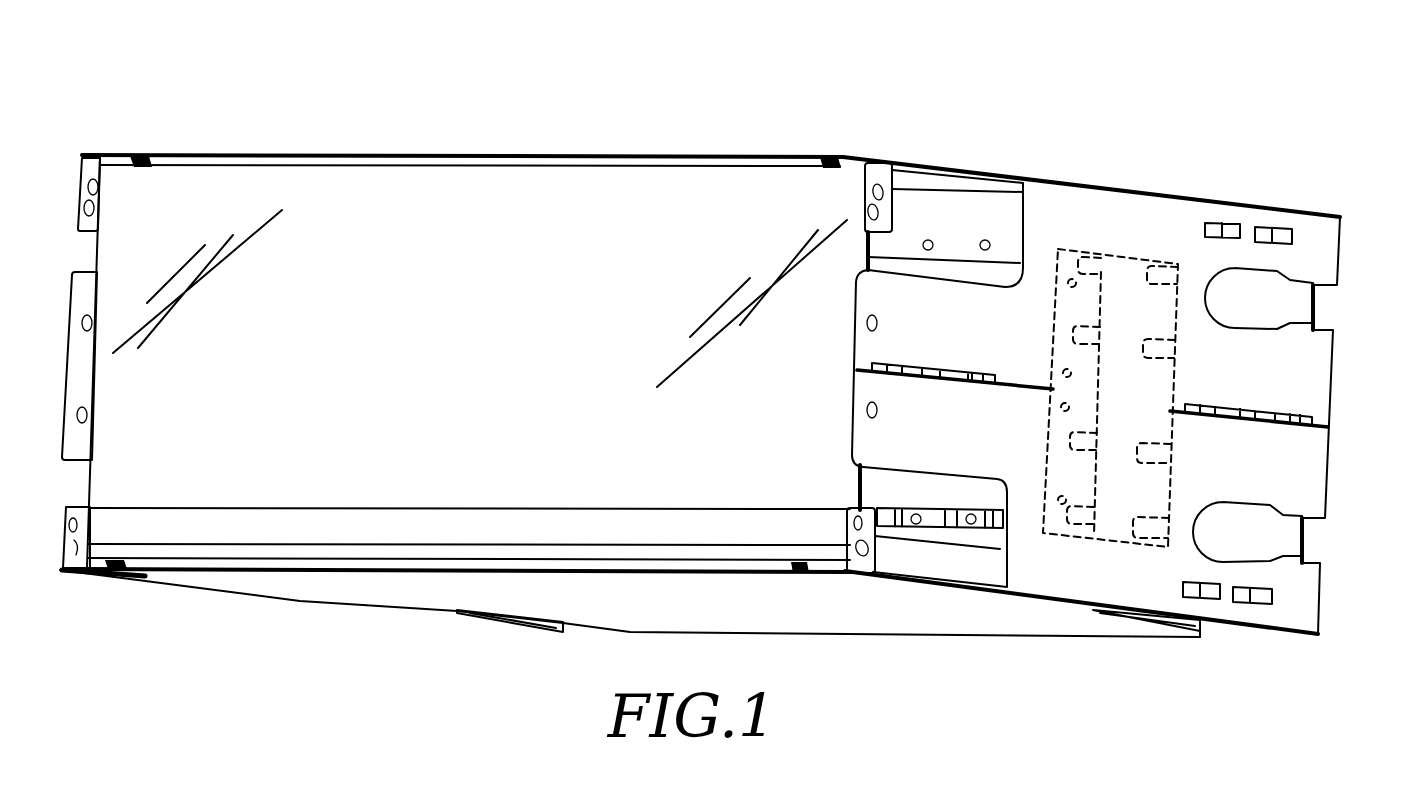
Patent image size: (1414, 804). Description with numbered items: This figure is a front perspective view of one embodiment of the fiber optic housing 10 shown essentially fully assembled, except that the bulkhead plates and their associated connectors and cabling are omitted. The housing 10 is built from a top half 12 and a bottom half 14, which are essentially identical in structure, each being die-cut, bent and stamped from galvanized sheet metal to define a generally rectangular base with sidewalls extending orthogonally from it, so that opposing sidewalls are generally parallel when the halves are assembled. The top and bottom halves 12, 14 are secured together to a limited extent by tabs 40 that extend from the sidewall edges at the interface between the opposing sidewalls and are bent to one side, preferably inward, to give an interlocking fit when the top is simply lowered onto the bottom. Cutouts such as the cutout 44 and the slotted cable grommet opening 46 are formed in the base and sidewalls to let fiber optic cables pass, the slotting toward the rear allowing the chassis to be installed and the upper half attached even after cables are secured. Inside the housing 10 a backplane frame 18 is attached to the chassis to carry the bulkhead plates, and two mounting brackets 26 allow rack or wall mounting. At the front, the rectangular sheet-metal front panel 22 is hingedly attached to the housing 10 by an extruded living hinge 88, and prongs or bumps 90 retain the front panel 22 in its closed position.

The fiber optic housing 10 is at (1332, 161).
The top half 12 is at (1195, 193).
The bottom half 14 is at (978, 612).
The backplane frame 18 is at (945, 532).
The front panel 22 is at (223, 473).
The mounting bracket 26 is at (1058, 315).
The tab 40 is at (890, 372).
The cutout 44 is at (960, 485).
The cable grommet opening 46 is at (1222, 320).
The extruded living hinge 88 is at (126, 521).
The prongs or bumps 90 is at (140, 168).